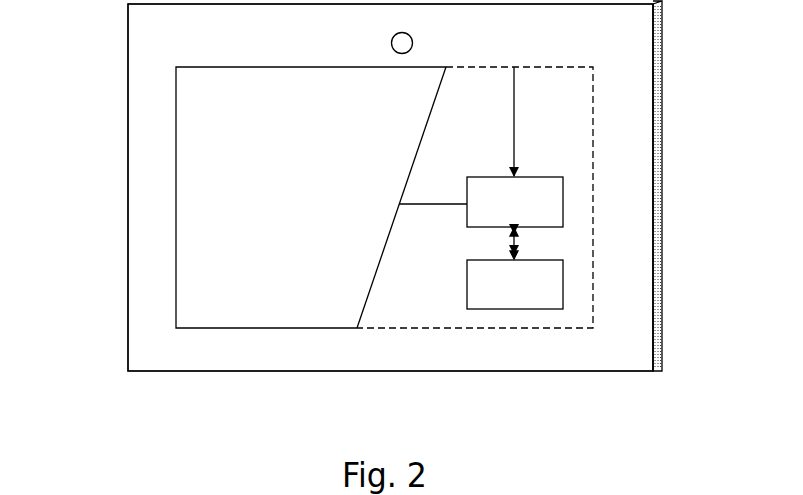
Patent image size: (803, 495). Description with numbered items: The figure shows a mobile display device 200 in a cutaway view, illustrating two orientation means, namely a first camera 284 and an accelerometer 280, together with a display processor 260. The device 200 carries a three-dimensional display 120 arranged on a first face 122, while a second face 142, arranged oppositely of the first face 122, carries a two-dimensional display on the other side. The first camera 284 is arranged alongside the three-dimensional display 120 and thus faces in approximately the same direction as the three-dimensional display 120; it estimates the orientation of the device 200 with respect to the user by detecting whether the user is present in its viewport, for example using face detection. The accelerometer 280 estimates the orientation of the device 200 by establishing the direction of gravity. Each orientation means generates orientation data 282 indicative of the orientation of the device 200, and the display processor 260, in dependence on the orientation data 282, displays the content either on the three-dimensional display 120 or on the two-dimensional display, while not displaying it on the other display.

The mobile display device 200 is at (105, 78).
The 3D display 120 is at (515, 332).
The first face 122 is at (592, 357).
The second face 142 is at (660, 368).
The first camera 284 is at (420, 48).
The orientation data 282 is at (503, 138).
The display processor 260 is at (515, 202).
The accelerometer 280 is at (515, 284).